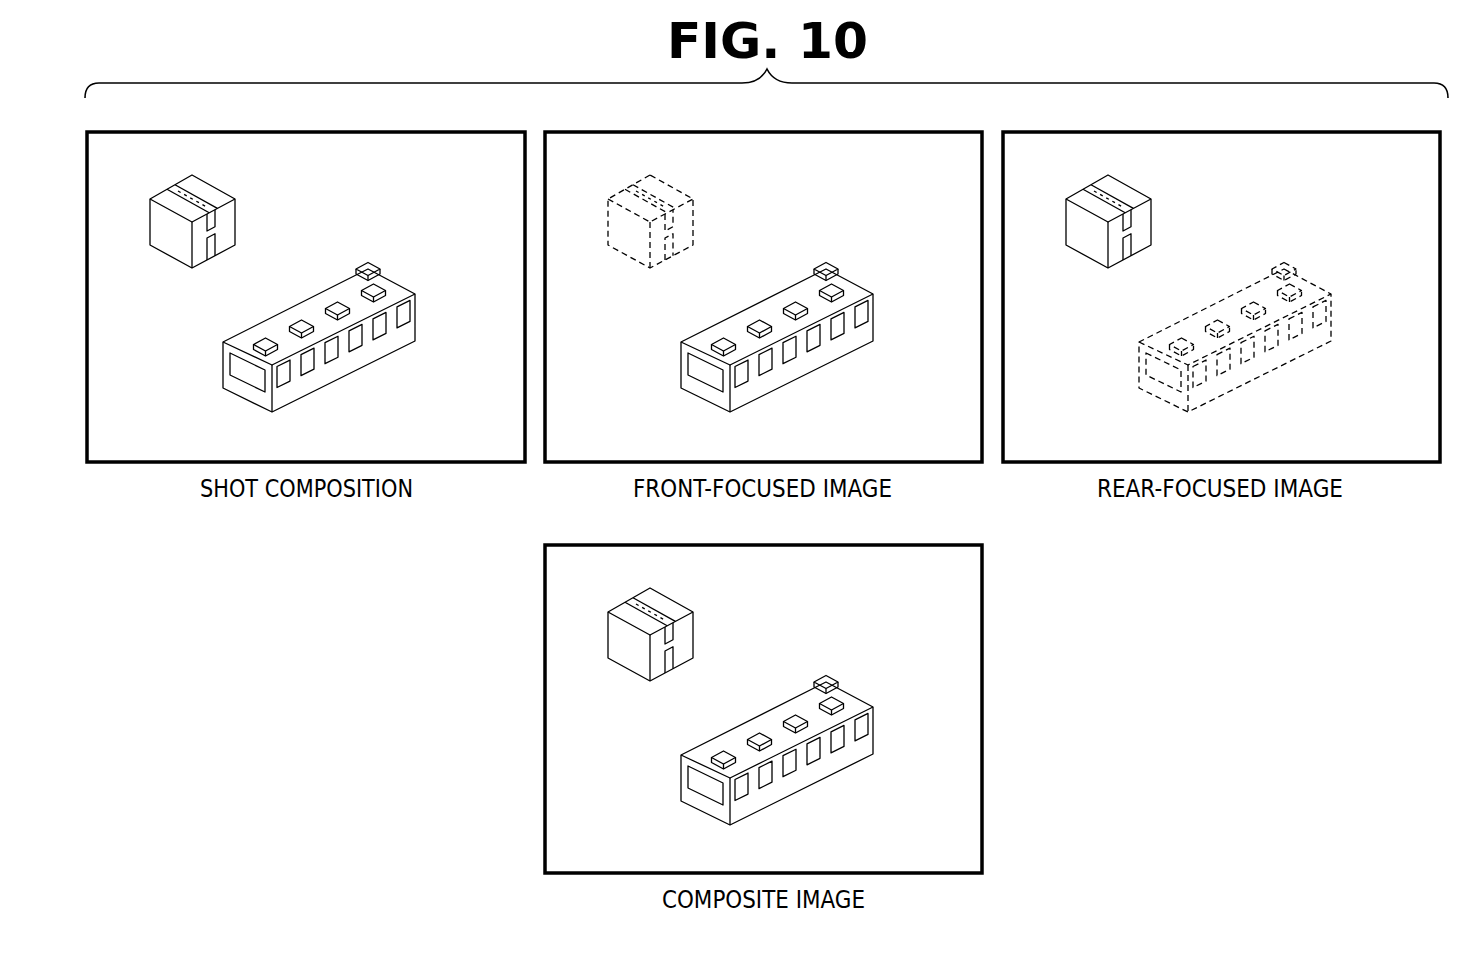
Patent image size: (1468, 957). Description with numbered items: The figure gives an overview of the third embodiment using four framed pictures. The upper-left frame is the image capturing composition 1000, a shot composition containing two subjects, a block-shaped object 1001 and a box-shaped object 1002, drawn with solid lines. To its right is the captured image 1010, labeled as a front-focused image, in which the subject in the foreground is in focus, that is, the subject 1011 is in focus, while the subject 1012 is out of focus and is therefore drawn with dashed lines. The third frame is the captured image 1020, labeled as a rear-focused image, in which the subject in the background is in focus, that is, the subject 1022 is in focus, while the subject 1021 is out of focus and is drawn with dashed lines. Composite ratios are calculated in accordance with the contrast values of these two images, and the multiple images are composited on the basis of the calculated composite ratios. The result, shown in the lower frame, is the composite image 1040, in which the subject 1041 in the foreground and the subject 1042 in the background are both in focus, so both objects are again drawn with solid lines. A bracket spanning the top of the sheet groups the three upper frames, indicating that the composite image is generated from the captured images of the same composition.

The image capturing composition 1000 is at (452, 132).
The rear subject (block-shaped object) in shot composition 1001 is at (416, 296).
The front subject (box-shaped object) in shot composition 1002 is at (208, 191).
The captured image 1010 is at (910, 132).
The subject 1011 is at (874, 296).
The subject 1012 is at (666, 191).
The captured image 1020 is at (1368, 132).
The subject 1021 is at (1332, 296).
The subject 1022 is at (1124, 191).
The composite image 1040 is at (910, 545).
The subject 1041 is at (874, 709).
The subject 1042 is at (666, 604).